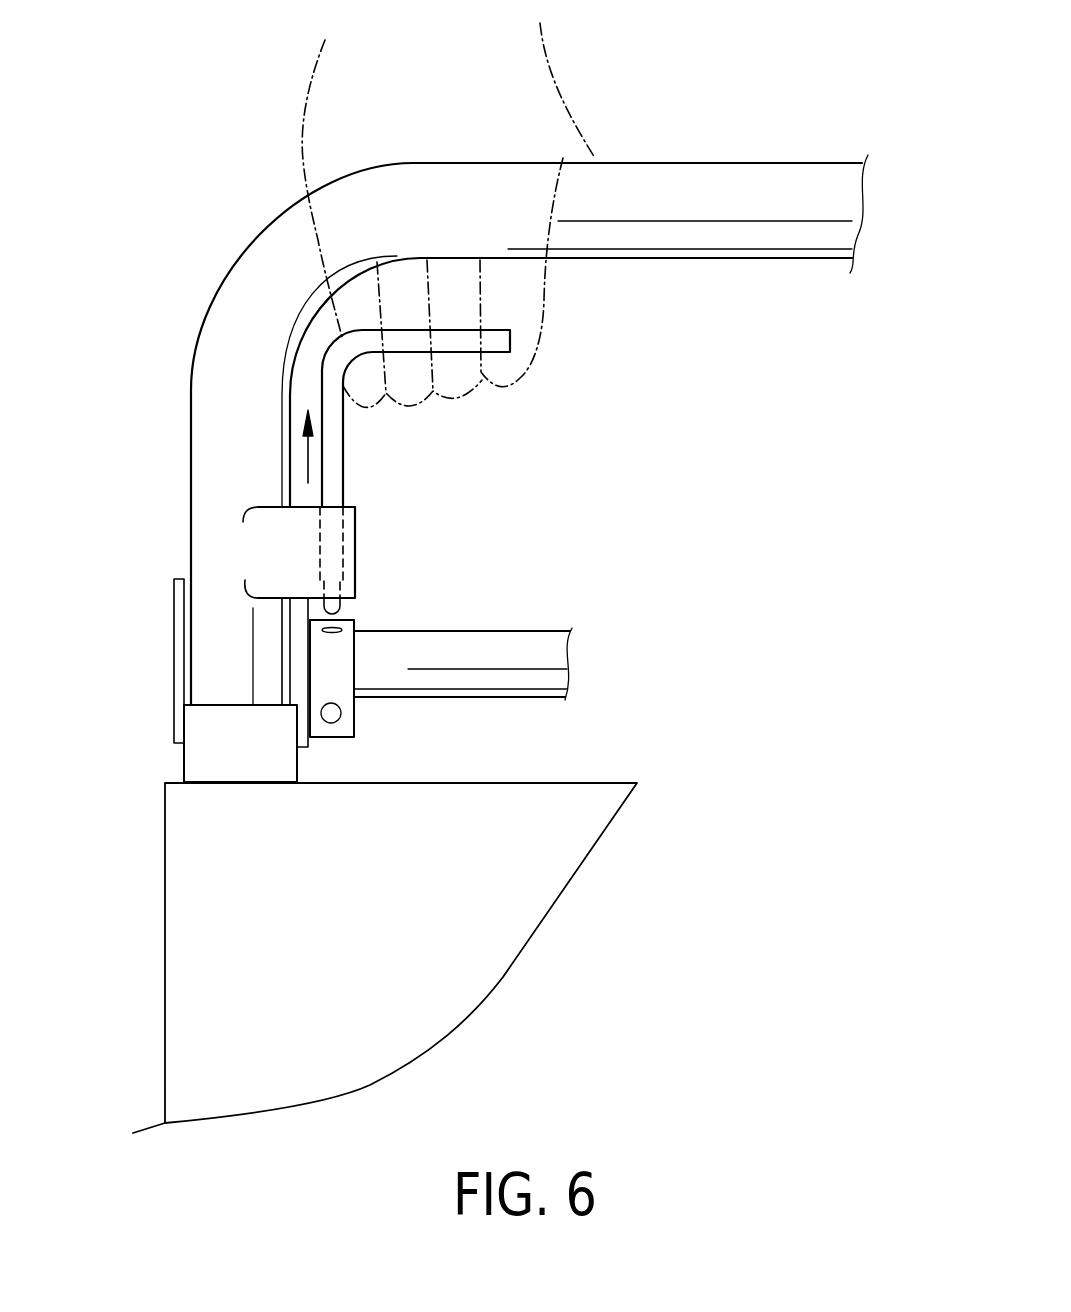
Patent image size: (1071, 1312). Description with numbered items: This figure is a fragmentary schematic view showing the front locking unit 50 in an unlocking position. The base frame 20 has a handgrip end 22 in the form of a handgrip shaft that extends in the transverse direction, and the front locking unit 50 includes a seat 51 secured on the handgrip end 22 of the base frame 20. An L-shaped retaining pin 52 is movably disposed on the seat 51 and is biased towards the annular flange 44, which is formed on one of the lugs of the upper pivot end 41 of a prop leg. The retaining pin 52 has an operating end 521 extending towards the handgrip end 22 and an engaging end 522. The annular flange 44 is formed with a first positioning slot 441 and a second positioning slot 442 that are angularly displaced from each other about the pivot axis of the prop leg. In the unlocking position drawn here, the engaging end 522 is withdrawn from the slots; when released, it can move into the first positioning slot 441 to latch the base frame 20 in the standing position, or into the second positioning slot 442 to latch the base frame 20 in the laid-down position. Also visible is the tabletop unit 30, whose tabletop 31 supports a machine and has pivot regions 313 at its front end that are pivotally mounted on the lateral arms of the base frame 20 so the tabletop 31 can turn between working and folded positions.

The base frame 20 is at (190, 255).
The handgrip end 22 is at (727, 187).
The tabletop unit 30 is at (140, 973).
The tabletop 31 is at (190, 880).
The pivot regions 313 is at (200, 722).
The upper pivot end 41 is at (177, 647).
The annular flange 44 is at (342, 670).
The first positioning slot 441 is at (340, 628).
The second positioning slot 442 is at (340, 723).
The front locking unit 50 is at (372, 547).
The seat 51 is at (275, 525).
The retaining pin 52 is at (338, 452).
The operating end 521 is at (498, 339).
The engaging end 522 is at (335, 607).